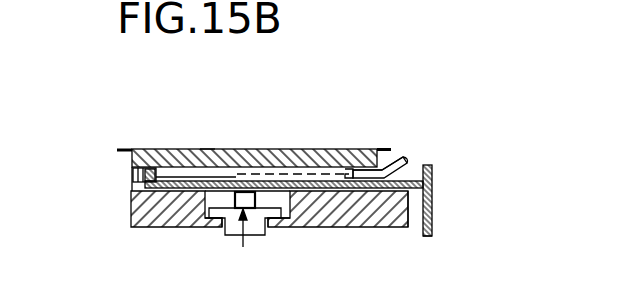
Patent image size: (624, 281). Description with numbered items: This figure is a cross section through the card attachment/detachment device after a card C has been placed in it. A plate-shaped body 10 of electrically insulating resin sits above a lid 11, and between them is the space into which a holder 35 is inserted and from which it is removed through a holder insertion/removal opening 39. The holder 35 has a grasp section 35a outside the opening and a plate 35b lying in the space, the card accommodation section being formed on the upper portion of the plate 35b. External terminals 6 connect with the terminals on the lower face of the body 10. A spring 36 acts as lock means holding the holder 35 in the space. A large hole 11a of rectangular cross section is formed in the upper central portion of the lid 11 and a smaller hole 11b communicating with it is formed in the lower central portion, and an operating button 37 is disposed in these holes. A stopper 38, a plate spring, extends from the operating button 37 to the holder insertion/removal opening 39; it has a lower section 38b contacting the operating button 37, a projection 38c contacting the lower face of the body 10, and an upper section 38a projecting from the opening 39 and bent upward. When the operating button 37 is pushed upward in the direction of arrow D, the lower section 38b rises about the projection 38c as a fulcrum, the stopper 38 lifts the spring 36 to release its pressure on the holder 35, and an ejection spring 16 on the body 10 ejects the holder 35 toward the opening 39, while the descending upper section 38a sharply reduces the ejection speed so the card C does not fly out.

The external terminals 6 is at (119, 148).
The plate-shaped body 10 is at (295, 158).
The lid 11 is at (140, 212).
The large hole 11a is at (218, 178).
The small hole 11b is at (227, 232).
The ejection spring 16 is at (134, 175).
The holder 35 is at (434, 186).
The grasp section 35a is at (434, 226).
The plate 35b is at (415, 192).
The spring 36 is at (338, 170).
The operating button 37 is at (262, 235).
The stopper 38 is at (412, 157).
The upper section 38a is at (406, 162).
The lower section 38b is at (272, 175).
The projection 38c is at (353, 170).
The holder insertion/removal opening 39 is at (432, 160).
The card C is at (207, 148).
The arrow D is at (243, 243).